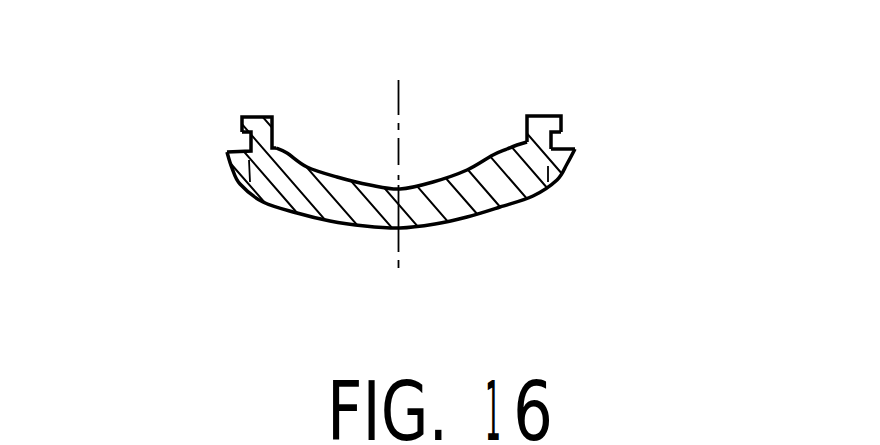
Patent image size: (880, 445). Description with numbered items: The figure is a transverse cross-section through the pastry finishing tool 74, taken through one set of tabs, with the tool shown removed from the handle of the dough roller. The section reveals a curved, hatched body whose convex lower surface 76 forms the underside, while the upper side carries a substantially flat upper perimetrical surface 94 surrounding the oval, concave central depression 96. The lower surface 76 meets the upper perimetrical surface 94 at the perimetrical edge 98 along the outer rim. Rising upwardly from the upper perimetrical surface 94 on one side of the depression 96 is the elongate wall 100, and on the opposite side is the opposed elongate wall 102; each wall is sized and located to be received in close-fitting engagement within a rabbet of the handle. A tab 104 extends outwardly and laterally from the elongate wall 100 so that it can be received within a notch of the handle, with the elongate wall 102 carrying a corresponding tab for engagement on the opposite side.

The pastry finishing tool 74 is at (240, 184).
The lower surface 76 is at (427, 229).
The upper perimetrical surface 94 is at (565, 138).
The central depression 96 is at (350, 183).
The perimetrical edge 98 is at (575, 149).
The elongate wall 100 is at (248, 142).
The elongate wall 102 is at (563, 138).
The tab 104 is at (242, 120).